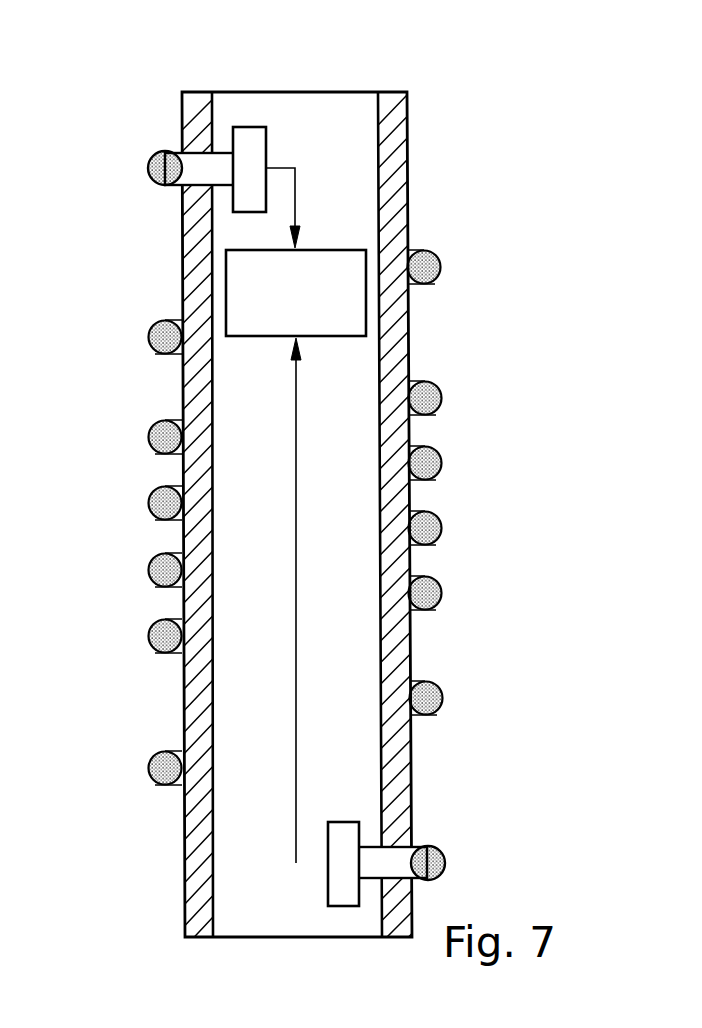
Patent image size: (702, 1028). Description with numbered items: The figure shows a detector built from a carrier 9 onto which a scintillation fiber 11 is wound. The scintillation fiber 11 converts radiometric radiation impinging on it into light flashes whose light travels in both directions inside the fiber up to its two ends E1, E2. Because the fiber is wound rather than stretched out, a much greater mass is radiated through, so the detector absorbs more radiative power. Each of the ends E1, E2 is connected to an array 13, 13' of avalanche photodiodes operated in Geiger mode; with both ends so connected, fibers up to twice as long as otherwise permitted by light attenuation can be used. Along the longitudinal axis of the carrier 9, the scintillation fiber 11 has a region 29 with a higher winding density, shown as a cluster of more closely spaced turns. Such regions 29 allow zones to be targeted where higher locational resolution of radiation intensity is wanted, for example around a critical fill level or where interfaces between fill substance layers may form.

The carrier 9 is at (398, 132).
The scintillation fiber 11 is at (430, 263).
The region with a higher winding density 29 is at (470, 383).
The array of avalanche photodiodes 13 is at (307, 899).
The array of avalanche photodiodes 13' is at (259, 110).
The end of the scintillation fiber E1 is at (398, 857).
The end of the scintillation fiber E2 is at (150, 167).